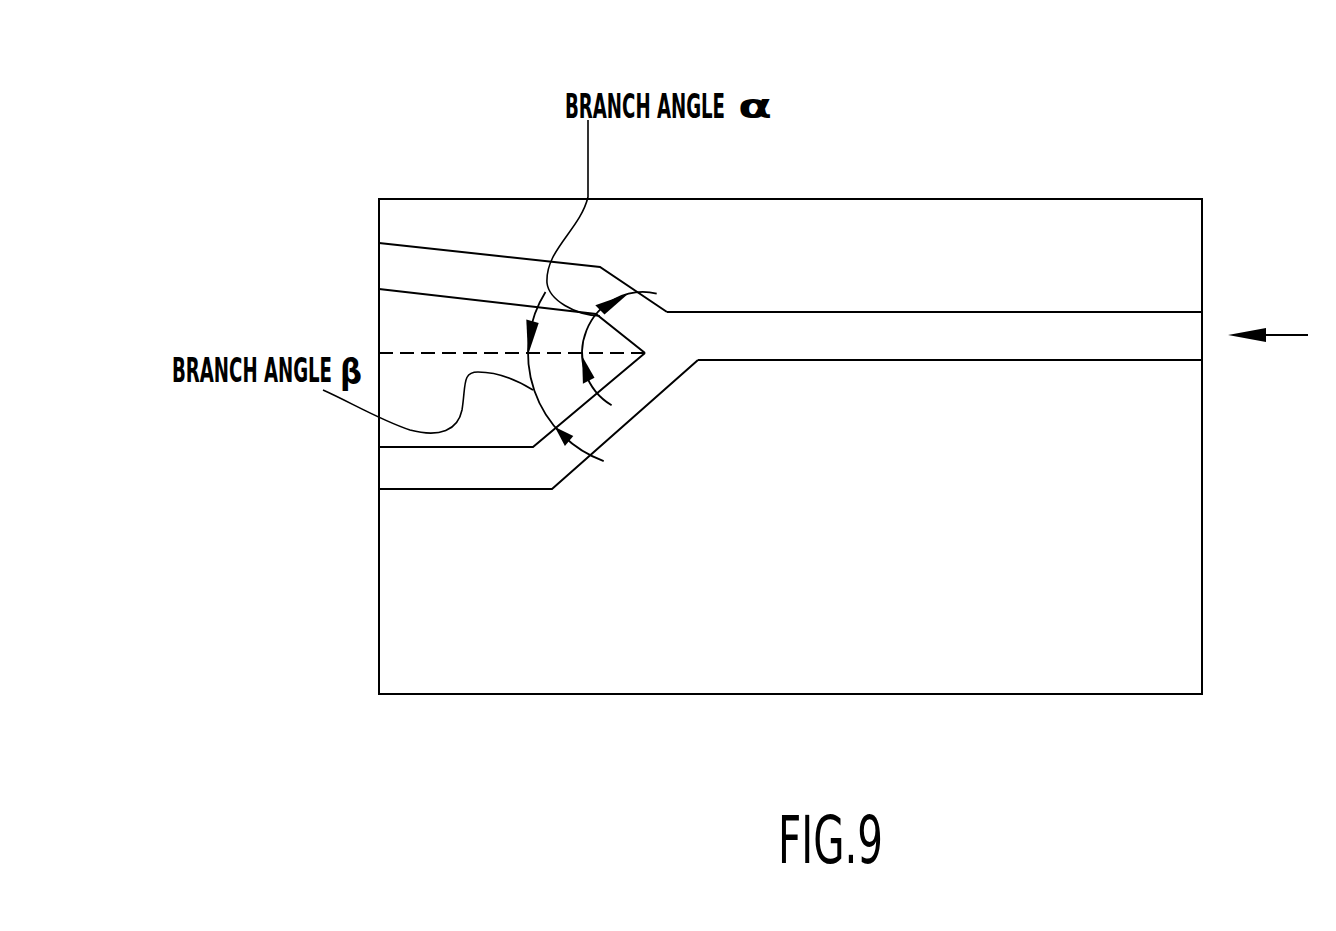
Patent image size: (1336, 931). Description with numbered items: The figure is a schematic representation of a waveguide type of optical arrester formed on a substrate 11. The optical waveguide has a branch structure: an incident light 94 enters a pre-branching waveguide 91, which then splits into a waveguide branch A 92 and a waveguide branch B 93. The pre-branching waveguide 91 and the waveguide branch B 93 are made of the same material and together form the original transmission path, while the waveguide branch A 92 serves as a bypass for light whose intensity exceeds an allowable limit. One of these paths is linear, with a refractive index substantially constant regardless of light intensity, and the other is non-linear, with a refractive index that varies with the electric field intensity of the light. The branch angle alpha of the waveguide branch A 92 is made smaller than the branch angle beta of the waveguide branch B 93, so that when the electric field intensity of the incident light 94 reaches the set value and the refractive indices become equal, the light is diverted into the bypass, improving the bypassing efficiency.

The substrate 11 is at (988, 653).
The pre-branching waveguide 91 is at (853, 330).
The waveguide branch A 92 is at (442, 268).
The waveguide branch B 93 is at (417, 490).
The incident light 94 is at (1281, 380).